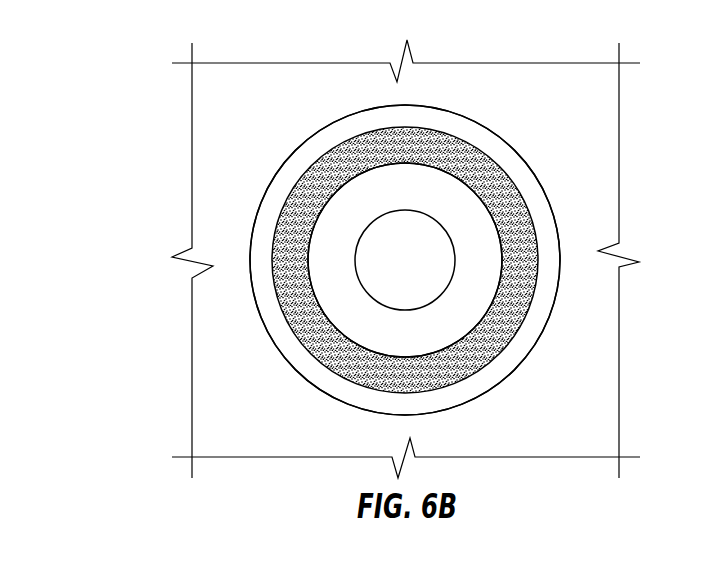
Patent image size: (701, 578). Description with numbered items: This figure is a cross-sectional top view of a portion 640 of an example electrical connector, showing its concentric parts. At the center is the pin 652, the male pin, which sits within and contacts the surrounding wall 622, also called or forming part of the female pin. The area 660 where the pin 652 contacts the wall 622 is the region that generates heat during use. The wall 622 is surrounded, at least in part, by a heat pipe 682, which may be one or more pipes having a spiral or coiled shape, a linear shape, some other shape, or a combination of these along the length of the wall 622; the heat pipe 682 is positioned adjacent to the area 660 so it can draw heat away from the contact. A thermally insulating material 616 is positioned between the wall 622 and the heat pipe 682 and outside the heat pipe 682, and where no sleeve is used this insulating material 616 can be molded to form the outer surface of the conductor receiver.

The portion of the electrical connector 640 is at (123, 68).
The thermally insulating material 616 is at (450, 137).
The wall 622 is at (308, 243).
The pin 652 is at (400, 213).
The area 660 is at (455, 248).
The heat pipe 682 is at (325, 388).